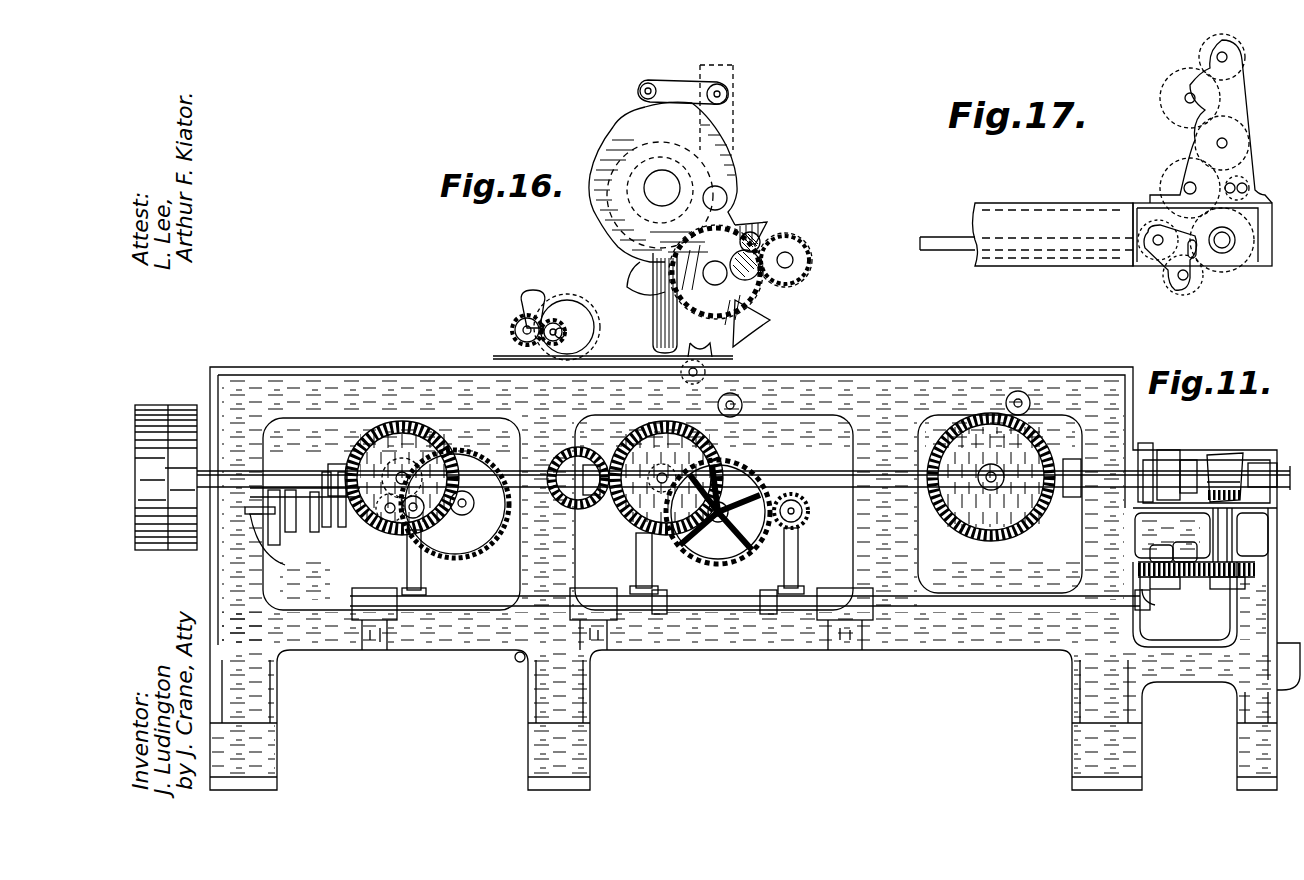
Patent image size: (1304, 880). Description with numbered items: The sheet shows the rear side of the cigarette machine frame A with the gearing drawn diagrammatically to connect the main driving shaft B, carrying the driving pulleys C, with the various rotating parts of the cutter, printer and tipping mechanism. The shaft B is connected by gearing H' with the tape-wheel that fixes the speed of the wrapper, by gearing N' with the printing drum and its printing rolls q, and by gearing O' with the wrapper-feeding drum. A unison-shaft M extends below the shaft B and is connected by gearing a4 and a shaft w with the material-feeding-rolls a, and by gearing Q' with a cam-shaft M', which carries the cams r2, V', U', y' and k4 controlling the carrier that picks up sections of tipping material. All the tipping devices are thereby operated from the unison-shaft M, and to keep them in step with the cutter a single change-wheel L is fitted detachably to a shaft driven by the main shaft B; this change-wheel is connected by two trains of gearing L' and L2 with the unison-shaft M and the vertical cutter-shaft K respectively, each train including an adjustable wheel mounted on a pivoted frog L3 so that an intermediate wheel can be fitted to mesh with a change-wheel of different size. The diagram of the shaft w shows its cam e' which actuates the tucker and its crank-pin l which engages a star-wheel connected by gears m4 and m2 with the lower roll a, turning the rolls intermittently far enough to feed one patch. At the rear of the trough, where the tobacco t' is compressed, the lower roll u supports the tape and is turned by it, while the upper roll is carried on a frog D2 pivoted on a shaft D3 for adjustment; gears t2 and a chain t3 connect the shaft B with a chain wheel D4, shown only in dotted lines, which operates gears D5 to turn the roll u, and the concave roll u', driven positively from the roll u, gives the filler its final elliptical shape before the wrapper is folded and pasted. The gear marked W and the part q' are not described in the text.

In FIG. 11, the frame A is at (755, 578).
In FIG. 17, the frame A is at (1032, 205).
In FIG. 11, the main driving shaft B is at (797, 478).
In FIG. 17, the main driving shaft B is at (1228, 250).
In FIG. 11, the driving pulleys C is at (166, 464).
In FIG. 11, the unison-shaft M is at (750, 607).
In FIG. 17, the unison-shaft M is at (947, 229).
In FIG. 11, the gear wheel W is at (420, 509).
In FIG. 11, the gearing Q' is at (435, 512).
In FIG. 11, the gearing O' is at (305, 463).
In FIG. 11, the cam V' is at (278, 488).
In FIG. 11, the cam y' is at (302, 482).
In FIG. 11, the cam k4 is at (328, 532).
In FIG. 11, the cam U' is at (329, 534).
In FIG. 11, the cam r2 is at (272, 514).
In FIG. 11, the cam-shaft M' is at (276, 551).
In FIG. 11, the gearing a4 is at (426, 590).
In FIG. 11, the gears t2 is at (565, 460).
In FIG. 11, the gearing N' is at (658, 493).
In FIG. 11, the printing rolls q is at (700, 527).
In FIG. 11, the small gear standard q' is at (808, 544).
In FIG. 11, the gearing H' is at (1004, 466).
In FIG. 11, the change-wheel L is at (1196, 598).
In FIG. 17, the change-wheel L is at (1222, 256).
In FIG. 11, the train of gearing L' is at (1169, 611).
In FIG. 17, the train of gearing L' is at (1151, 271).
In FIG. 17, the gears L2 is at (1145, 130).
In FIG. 11, the pivoted frog L3 is at (1150, 550).
In FIG. 17, the pivoted frog L3 is at (1150, 298).
In FIG. 17, the vertical shaft K is at (1215, 55).
In FIG. 16, the cam e' is at (678, 198).
In FIG. 16, the shaft w is at (660, 195).
In FIG. 16, the crank-pin l is at (720, 196).
In FIG. 16, the material-feeding-rolls a is at (708, 291).
In FIG. 16, the gear m4 is at (760, 242).
In FIG. 16, the gear m2 is at (812, 260).
In FIG. 16, the roll u is at (560, 299).
In FIG. 16, the roll u' is at (755, 323).
In FIG. 16, the tobacco t' is at (477, 342).
In FIG. 16, the chain t3 is at (595, 445).
In FIG. 16, the frog D2 is at (528, 300).
In FIG. 16, the shaft D3 is at (522, 320).
In FIG. 16, the chain wheel D4 is at (578, 312).
In FIG. 16, the gears D5 is at (540, 335).